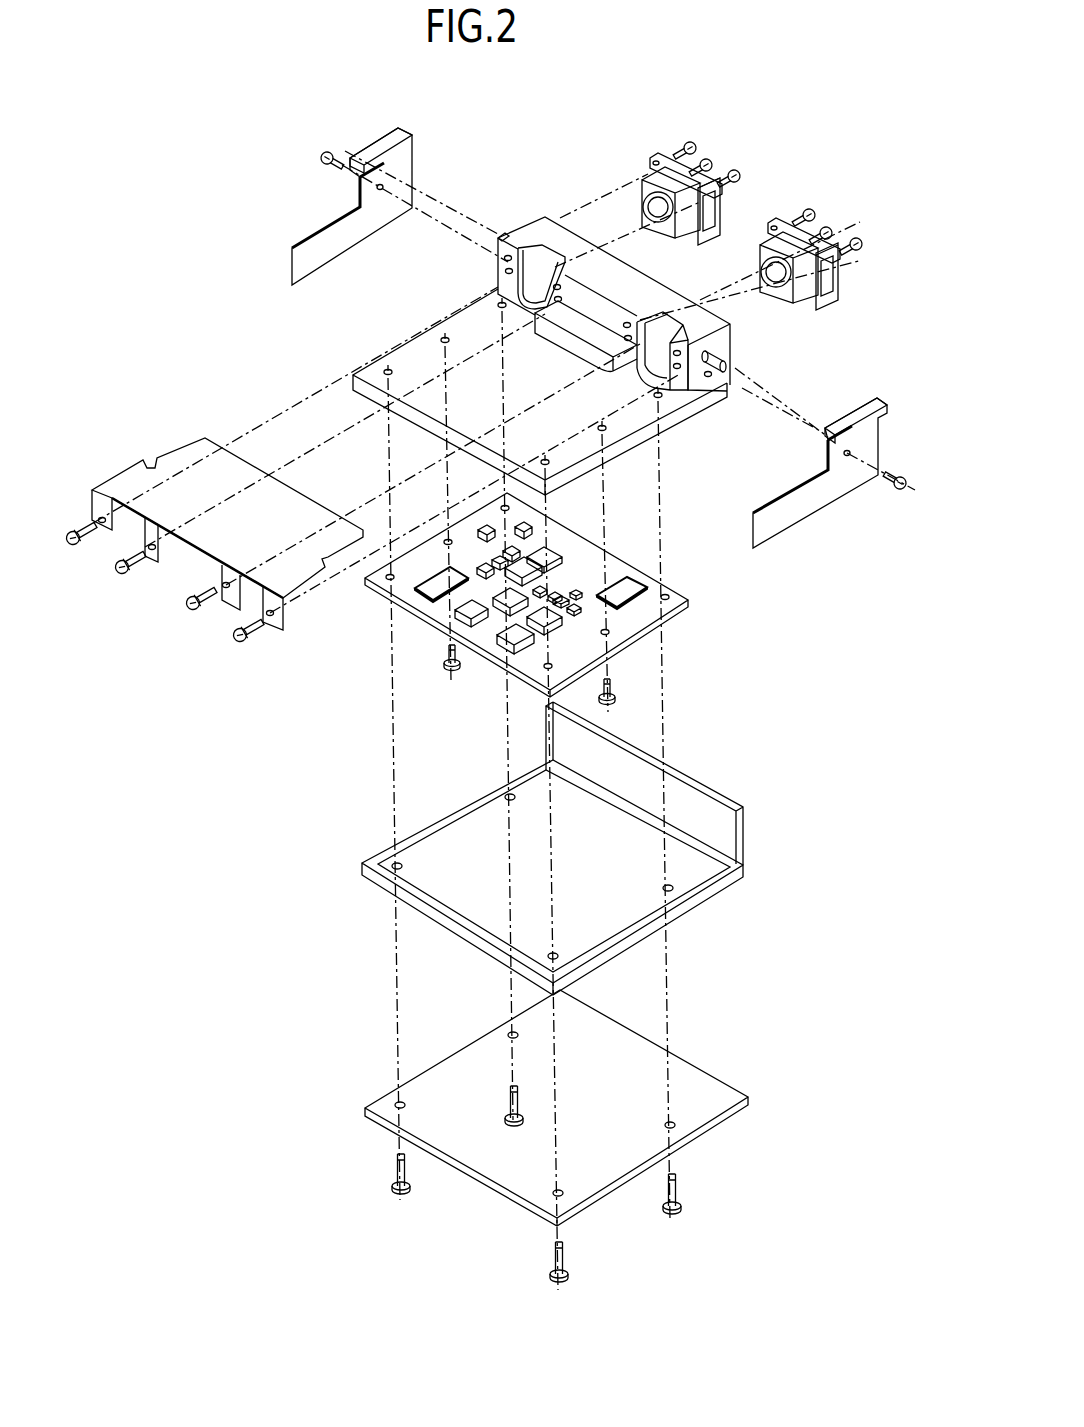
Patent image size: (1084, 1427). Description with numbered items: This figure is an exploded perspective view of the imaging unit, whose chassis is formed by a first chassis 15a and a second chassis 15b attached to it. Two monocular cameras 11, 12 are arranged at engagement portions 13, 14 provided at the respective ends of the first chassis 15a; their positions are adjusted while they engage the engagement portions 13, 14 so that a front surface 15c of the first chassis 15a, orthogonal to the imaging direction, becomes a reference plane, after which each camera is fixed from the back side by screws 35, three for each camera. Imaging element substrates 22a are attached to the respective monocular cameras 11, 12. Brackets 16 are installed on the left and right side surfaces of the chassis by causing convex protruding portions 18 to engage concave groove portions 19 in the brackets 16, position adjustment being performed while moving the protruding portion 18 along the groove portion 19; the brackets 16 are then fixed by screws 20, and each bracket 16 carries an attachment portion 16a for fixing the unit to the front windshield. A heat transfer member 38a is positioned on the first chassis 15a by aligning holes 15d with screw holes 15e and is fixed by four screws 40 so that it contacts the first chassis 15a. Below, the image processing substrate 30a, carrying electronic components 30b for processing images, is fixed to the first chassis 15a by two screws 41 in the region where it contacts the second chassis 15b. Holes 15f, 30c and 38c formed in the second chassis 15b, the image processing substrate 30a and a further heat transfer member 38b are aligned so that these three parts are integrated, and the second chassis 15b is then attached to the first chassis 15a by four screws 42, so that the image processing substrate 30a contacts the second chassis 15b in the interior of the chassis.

The monocular camera 11 is at (745, 150).
The monocular camera 12 is at (873, 218).
The engagement portion 13 is at (565, 252).
The engagement portion 14 is at (690, 318).
The first chassis 15a is at (432, 325).
The second chassis 15b is at (437, 850).
The front surface 15c is at (673, 378).
The holes 15d is at (100, 525).
The screw holes 15e is at (505, 262).
The holes 15f is at (508, 795).
The bracket 16 is at (332, 257).
The attachment portion 16a is at (390, 145).
The protruding portion 18 is at (505, 238).
The groove portion 19 is at (358, 180).
The screw 20 is at (330, 152).
The imaging element substrate 22a is at (721, 218).
The image processing substrate 30a is at (430, 557).
The electronic components 30b is at (515, 632).
The holes 30c is at (503, 505).
The screws 35 is at (690, 142).
The heat transfer member 38a is at (195, 450).
The heat transfer member 38b is at (438, 1078).
The holes 38c is at (512, 1032).
The screws 40 is at (68, 545).
The screws 41 is at (447, 660).
The screws 42 is at (396, 1188).